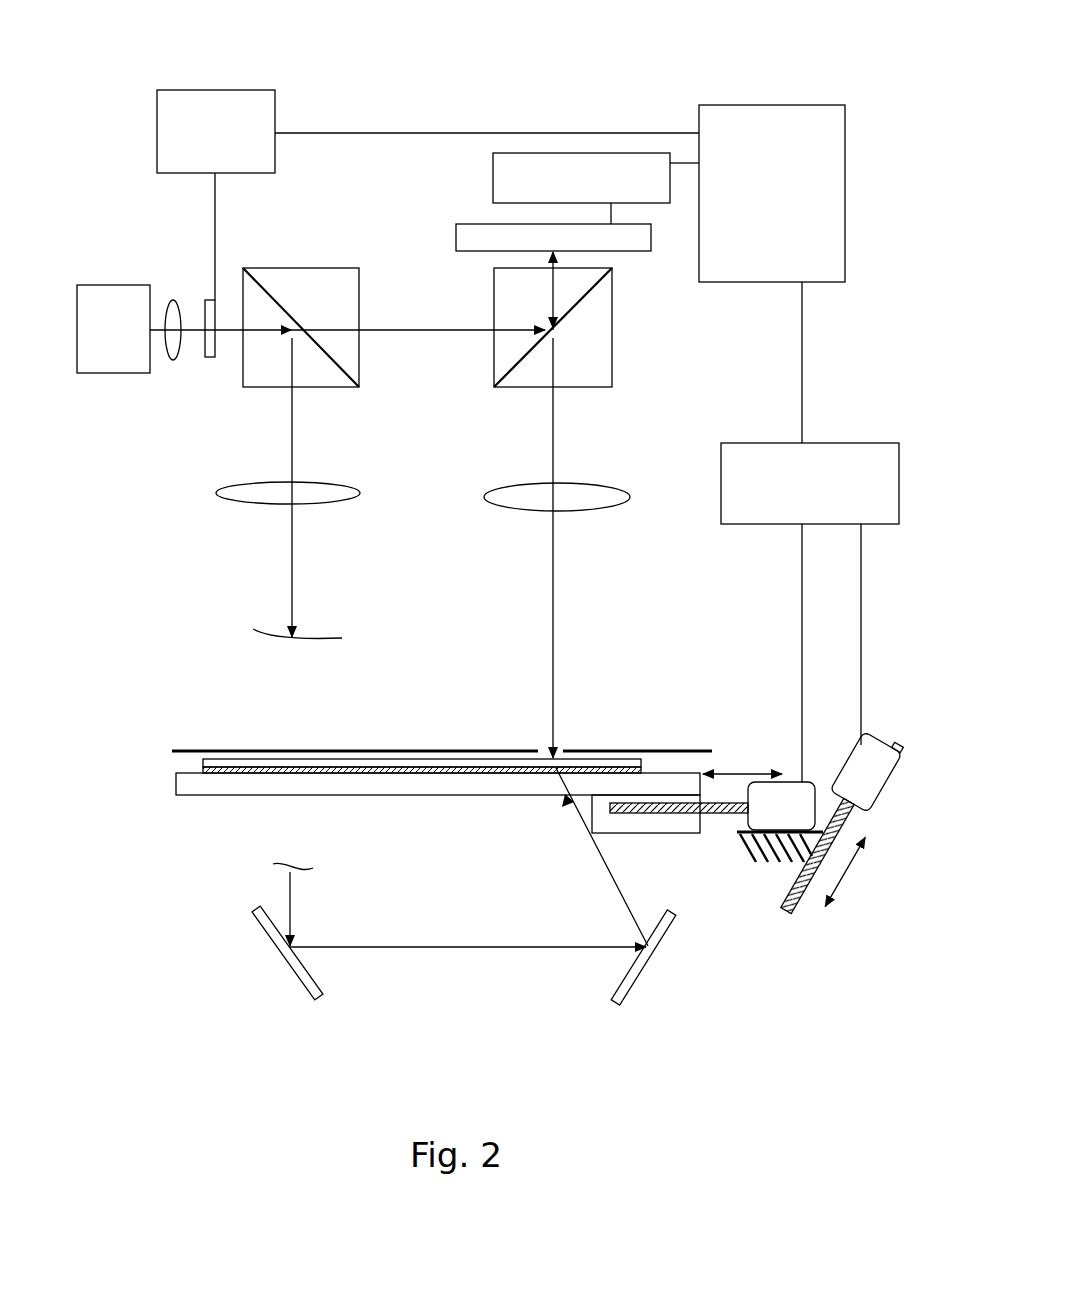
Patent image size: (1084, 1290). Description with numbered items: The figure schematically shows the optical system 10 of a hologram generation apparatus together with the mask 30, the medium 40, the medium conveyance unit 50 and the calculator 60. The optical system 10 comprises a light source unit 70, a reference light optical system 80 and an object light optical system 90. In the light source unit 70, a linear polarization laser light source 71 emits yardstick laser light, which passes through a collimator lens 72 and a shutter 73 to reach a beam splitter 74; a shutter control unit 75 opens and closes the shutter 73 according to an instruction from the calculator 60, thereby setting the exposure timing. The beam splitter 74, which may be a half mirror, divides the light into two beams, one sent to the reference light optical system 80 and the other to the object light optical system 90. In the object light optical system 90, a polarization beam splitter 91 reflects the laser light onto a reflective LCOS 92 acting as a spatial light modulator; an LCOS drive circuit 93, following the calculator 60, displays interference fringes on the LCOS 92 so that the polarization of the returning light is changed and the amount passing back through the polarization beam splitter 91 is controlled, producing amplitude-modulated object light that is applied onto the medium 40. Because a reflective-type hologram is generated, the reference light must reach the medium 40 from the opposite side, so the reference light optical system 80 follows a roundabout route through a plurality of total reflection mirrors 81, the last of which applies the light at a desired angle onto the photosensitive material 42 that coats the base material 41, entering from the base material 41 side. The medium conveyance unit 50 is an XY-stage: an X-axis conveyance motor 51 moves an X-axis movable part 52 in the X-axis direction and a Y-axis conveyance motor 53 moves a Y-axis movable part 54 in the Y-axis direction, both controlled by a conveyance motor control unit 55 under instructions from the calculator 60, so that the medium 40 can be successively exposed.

The optical system 10 is at (413, 69).
The mask 30 is at (663, 750).
The medium 40 is at (135, 732).
The base material 41 is at (178, 771).
The photosensitive material 42 is at (203, 760).
The medium conveyance unit 50 is at (797, 990).
The X-axis conveyance motor 51 is at (795, 782).
The X-axis movable part 52 is at (718, 818).
The Y-axis conveyance motor 53 is at (882, 805).
The Y-axis movable part 54 is at (800, 917).
The conveyance motor control unit 55 is at (845, 443).
The calculator 60 is at (813, 104).
The light source unit 70 is at (120, 180).
The linear polarization laser light source 71 is at (108, 285).
The collimator lens 72 is at (173, 361).
The shutter 73 is at (205, 305).
The beam splitter 74 is at (293, 268).
The shutter control unit 75 is at (252, 90).
The reference light optical system 80 is at (460, 1030).
The total reflection mirror 81 is at (297, 979).
The object light optical system 90 is at (464, 488).
The polarization beam splitter 91 is at (612, 352).
The LCOS 92 is at (457, 232).
The LCOS drive circuit 93 is at (562, 153).